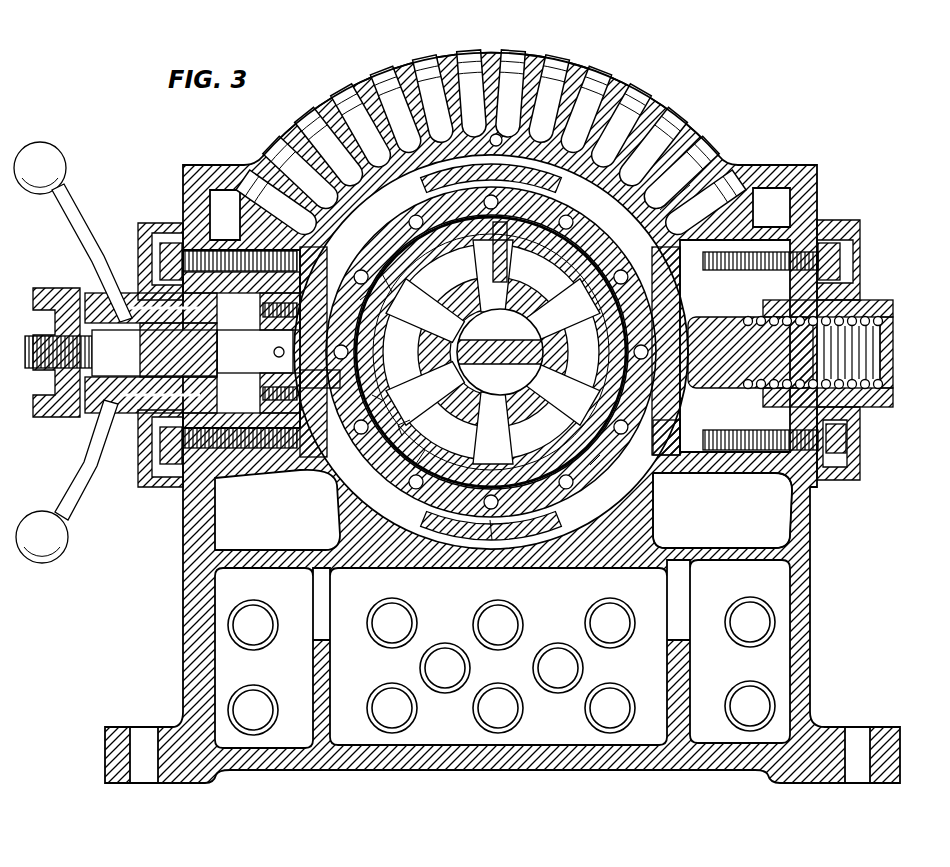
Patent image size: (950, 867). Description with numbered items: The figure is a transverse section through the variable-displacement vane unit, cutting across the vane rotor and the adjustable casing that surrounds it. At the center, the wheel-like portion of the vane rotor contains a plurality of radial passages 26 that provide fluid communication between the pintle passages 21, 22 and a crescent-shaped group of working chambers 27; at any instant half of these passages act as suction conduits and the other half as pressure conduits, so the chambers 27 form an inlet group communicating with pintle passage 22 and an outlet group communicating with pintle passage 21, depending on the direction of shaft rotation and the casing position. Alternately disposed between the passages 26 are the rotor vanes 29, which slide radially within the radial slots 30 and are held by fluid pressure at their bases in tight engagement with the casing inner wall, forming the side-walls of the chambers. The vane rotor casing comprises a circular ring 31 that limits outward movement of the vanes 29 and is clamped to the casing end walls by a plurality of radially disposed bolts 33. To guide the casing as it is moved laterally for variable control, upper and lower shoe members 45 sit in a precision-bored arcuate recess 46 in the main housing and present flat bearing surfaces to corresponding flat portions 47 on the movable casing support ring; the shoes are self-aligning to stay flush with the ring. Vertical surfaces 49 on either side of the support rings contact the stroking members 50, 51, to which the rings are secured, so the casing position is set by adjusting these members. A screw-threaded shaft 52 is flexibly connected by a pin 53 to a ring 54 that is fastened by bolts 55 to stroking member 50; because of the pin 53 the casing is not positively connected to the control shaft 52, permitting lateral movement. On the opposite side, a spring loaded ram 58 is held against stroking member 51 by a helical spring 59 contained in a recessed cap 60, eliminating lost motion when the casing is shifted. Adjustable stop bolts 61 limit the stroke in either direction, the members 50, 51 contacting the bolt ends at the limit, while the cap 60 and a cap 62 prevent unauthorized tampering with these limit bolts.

The pintle passage 21 is at (492, 325).
The pintle passage 22 is at (482, 366).
The radial passages 26 is at (400, 428).
The working chambers 27 is at (490, 522).
The rotor vanes 29 is at (372, 396).
The radial slots 30 is at (362, 300).
The circular ring 31 is at (590, 466).
The radially disposed bolts 33 is at (660, 474).
The shoe member 45 is at (545, 528).
The arcuate recess 46 is at (660, 210).
The flat portions 47 is at (568, 198).
The vertical surfaces 49 is at (680, 292).
The stroking member 50 is at (300, 458).
The stroking member 51 is at (684, 430).
The screw-threaded shaft 52 is at (232, 326).
The pin 53 is at (272, 352).
The ring 54 is at (282, 398).
The bolts 55 is at (312, 380).
The spring loaded ram 58 is at (765, 318).
The helical spring 59 is at (868, 318).
The recessed cap 60 is at (890, 312).
The adjustable stop bolts 61 is at (745, 432).
The cap 62 is at (148, 472).